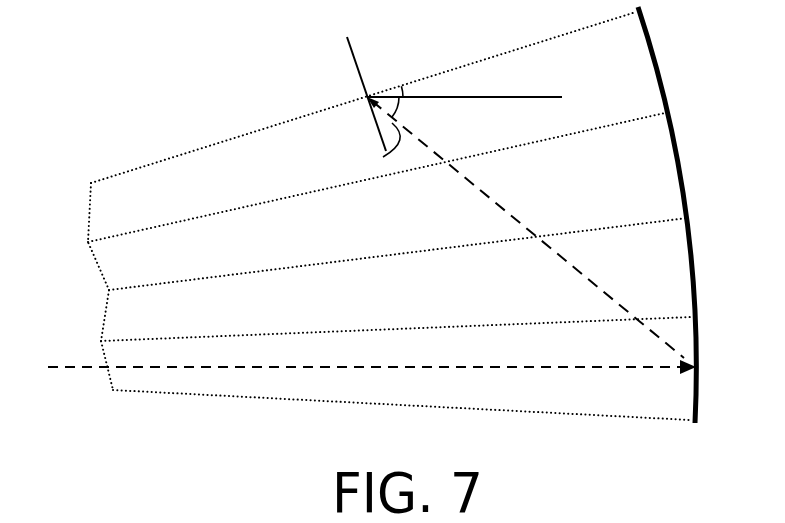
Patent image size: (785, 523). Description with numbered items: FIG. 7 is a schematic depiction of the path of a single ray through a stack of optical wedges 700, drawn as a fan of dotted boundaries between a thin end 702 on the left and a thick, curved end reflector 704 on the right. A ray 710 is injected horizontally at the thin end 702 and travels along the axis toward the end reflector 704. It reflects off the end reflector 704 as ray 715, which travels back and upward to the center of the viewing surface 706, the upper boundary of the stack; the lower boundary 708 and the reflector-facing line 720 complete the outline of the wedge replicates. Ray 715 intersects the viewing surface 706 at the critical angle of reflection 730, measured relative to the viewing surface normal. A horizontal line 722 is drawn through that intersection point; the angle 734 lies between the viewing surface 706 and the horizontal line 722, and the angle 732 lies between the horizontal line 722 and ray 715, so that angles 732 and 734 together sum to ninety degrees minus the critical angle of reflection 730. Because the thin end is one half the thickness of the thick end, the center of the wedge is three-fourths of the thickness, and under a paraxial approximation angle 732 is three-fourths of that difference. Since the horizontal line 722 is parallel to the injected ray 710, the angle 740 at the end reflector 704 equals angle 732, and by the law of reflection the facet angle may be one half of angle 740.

The stack of optical wedges 700 is at (204, 84).
The thin end 702 is at (113, 383).
The end reflector 704 is at (699, 336).
The viewing surface 706 is at (559, 32).
The lower field boundary 708 is at (648, 421).
The ray 710 is at (72, 368).
The ray 715 is at (504, 208).
The reflector surface line 720 is at (356, 58).
The horizontal line 722 is at (527, 96).
The critical angle of reflection 730 is at (385, 157).
The angle 732 is at (400, 103).
The angle 734 is at (403, 91).
The angle 740 is at (681, 358).